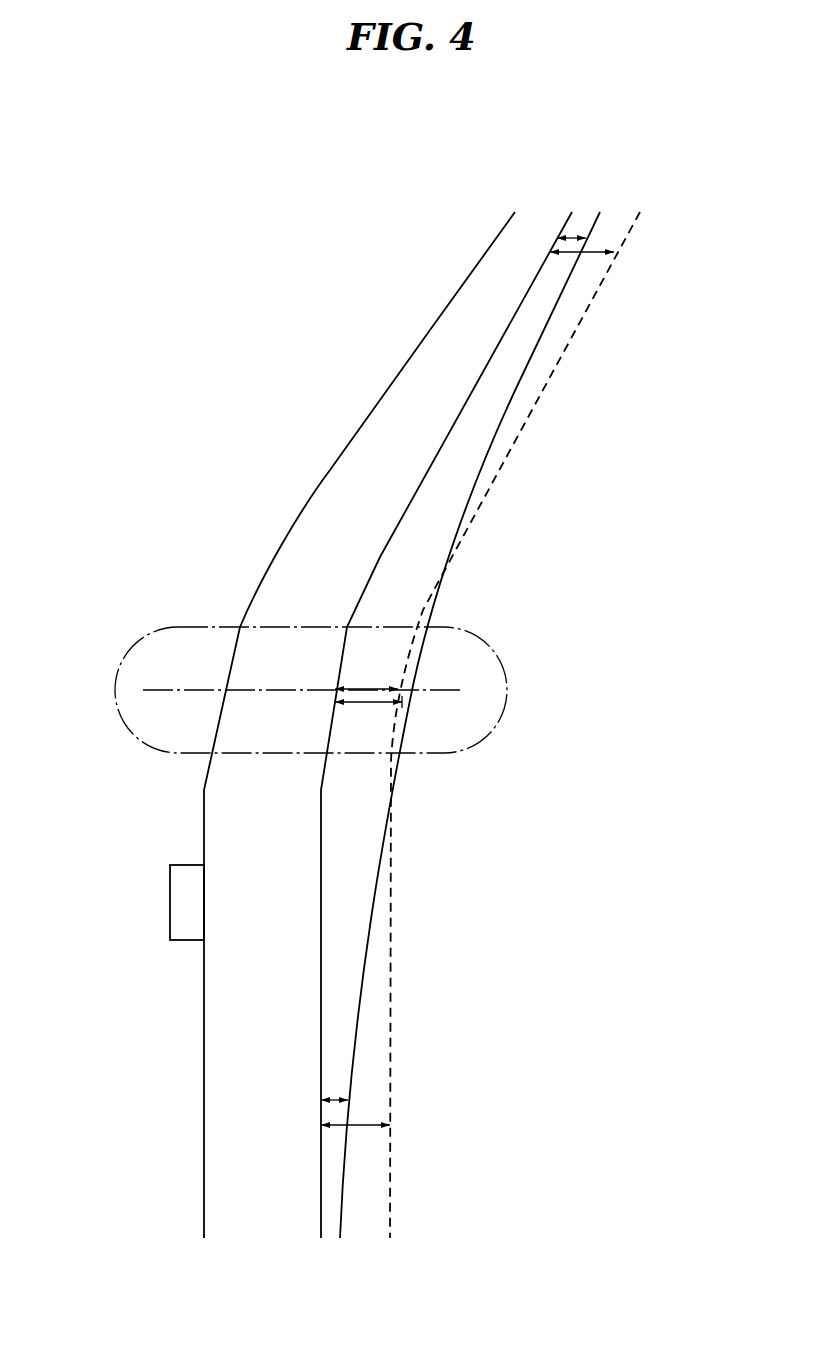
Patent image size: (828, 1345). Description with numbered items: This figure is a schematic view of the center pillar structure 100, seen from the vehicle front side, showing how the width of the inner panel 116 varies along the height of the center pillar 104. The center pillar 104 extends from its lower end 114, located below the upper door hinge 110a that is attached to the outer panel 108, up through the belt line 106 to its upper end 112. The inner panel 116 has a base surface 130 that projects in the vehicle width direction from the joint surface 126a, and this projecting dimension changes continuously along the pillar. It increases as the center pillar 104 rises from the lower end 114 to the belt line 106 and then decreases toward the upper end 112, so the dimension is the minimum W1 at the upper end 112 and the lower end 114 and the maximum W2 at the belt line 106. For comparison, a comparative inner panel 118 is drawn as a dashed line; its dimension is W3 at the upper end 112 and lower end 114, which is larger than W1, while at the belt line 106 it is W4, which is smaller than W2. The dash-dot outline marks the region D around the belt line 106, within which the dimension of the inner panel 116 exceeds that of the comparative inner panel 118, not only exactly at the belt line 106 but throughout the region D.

The center pillar structure 100 is at (535, 163).
The center pillar 104 is at (282, 527).
The belt line 106 is at (187, 690).
The outer panel 108 is at (352, 445).
The upper door hinge 110a is at (168, 900).
The upper end 112 is at (525, 242).
The lower end 114 is at (275, 1115).
The inner panel 116 is at (533, 362).
The inner panel 118 is at (512, 438).
The joint surface 126a is at (458, 407).
The base surface 130 is at (550, 312).
The dimension W1 is at (572, 237).
The dimension W2 is at (372, 707).
The dimension W3 is at (600, 247).
The dimension W4 is at (373, 687).
The region D is at (512, 668).